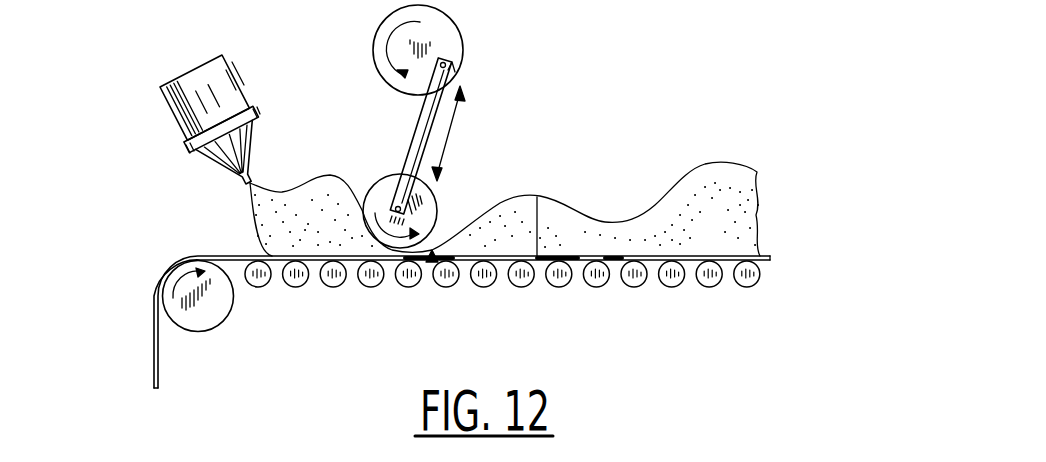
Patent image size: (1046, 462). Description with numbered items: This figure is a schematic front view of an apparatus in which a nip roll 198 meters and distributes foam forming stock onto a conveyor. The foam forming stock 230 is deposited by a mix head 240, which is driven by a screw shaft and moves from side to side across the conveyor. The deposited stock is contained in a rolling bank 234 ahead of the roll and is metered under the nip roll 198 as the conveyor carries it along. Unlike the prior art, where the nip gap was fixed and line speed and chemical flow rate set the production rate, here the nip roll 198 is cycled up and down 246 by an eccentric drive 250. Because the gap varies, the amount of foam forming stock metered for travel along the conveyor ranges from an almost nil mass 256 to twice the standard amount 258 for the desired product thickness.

The nip roll 198 is at (430, 207).
The foam forming stock 230 is at (257, 214).
The rolling bank 234 is at (317, 180).
The mix head 240 is at (202, 140).
The up and down cycling of the nip roll 246 is at (450, 132).
The eccentric drive 250 is at (415, 135).
The almost nil mass 256 is at (432, 256).
The twice the standard amount 258 is at (537, 256).